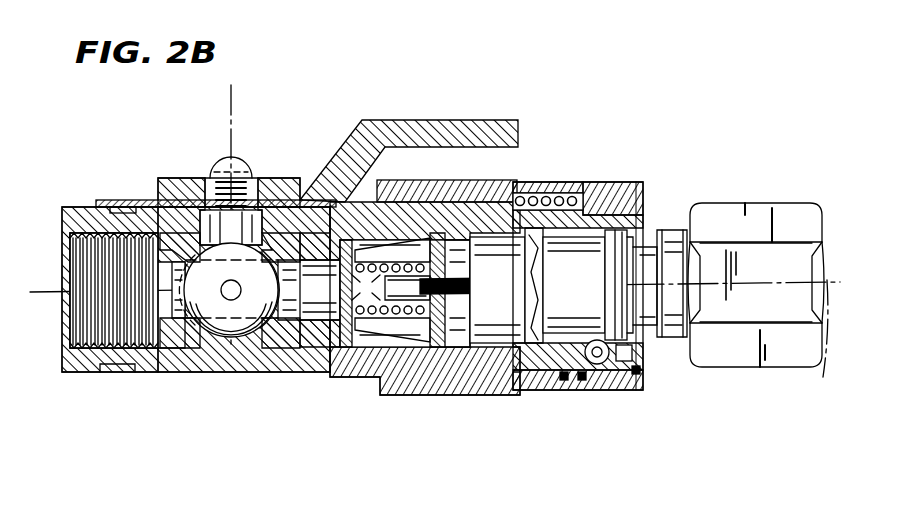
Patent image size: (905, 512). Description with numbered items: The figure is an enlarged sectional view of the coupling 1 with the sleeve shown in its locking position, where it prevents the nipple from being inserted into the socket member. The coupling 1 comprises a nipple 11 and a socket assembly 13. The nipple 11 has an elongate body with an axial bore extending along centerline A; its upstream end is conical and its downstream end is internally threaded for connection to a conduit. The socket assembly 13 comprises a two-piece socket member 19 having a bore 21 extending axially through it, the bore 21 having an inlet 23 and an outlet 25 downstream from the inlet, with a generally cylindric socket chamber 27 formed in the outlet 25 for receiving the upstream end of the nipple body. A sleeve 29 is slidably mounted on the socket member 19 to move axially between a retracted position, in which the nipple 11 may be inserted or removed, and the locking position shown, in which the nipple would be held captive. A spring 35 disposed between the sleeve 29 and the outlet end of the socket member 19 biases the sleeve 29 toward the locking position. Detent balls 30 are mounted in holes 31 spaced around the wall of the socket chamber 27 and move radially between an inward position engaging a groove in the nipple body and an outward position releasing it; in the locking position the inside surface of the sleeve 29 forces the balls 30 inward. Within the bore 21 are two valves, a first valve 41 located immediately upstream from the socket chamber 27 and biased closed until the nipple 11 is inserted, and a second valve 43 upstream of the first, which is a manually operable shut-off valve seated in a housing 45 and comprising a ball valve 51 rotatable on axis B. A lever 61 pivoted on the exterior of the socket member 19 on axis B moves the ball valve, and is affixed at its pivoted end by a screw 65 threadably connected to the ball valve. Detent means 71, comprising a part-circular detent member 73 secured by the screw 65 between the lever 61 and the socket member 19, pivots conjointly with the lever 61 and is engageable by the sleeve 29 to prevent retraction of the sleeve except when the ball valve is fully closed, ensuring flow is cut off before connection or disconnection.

The coupling 1 is at (274, 424).
The nipple 11 is at (762, 204).
The socket assembly 13 is at (80, 196).
The socket member 19 is at (326, 374).
The bore 21 is at (90, 336).
The inlet 23 is at (58, 250).
The outlet 25 is at (646, 238).
The socket chamber 27 is at (502, 322).
The sleeve 29 is at (565, 182).
The detent balls 30 is at (596, 392).
The holes 31 is at (620, 392).
The spring 35 is at (586, 194).
The first valve 41 is at (346, 374).
The second valve 43 is at (210, 338).
The housing 45 is at (290, 346).
The ball valve 51 is at (172, 180).
The lever 61 is at (448, 128).
The screw 65 is at (254, 166).
The detent means 71 is at (360, 200).
The detent member 73 is at (108, 200).
The centerline A is at (811, 344).
The axis B is at (236, 106).